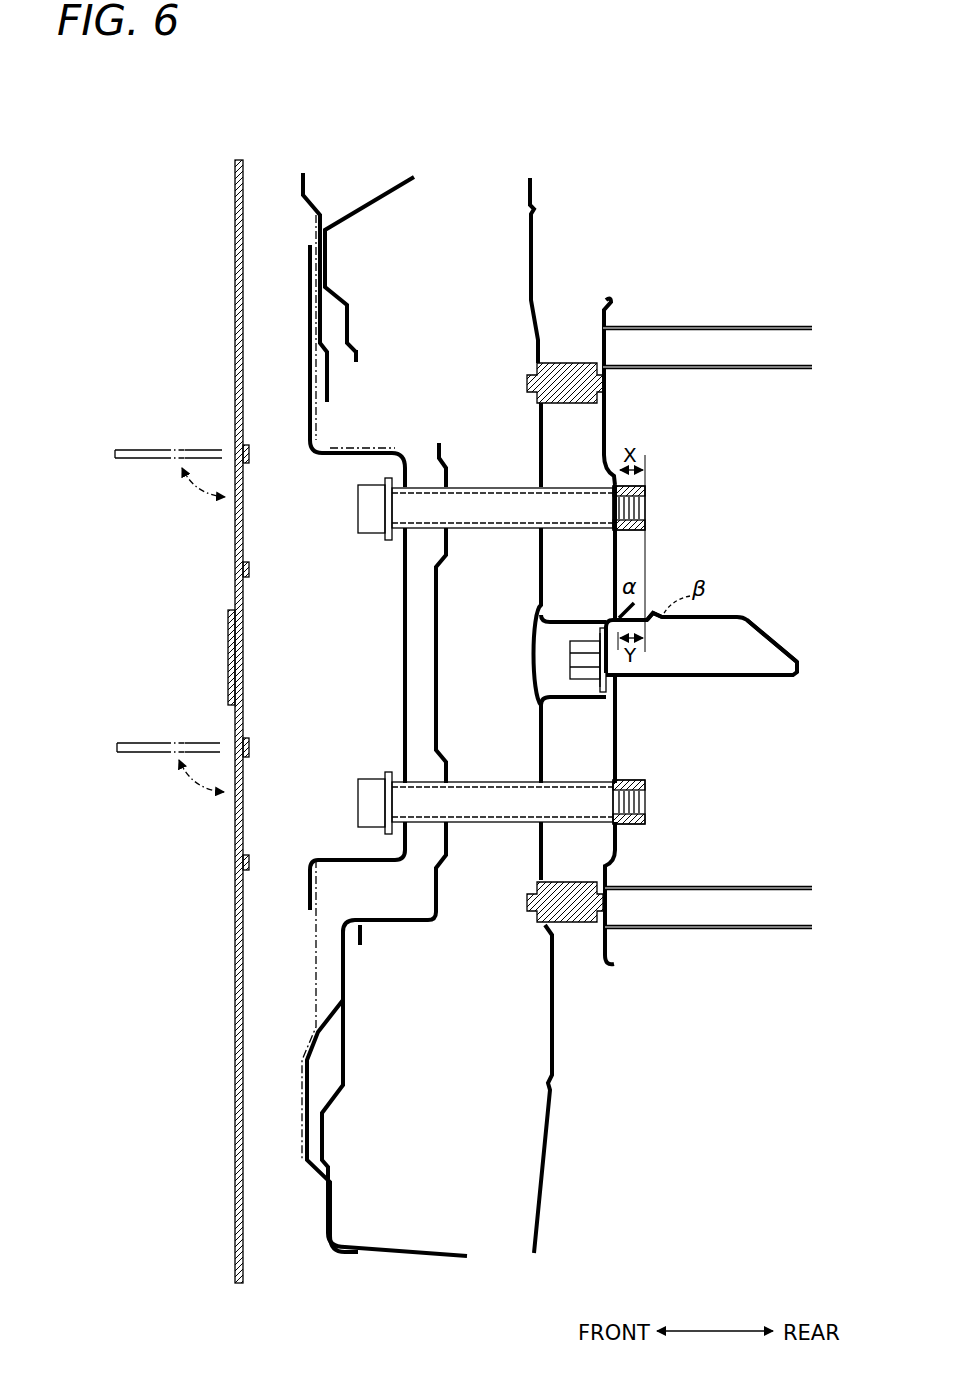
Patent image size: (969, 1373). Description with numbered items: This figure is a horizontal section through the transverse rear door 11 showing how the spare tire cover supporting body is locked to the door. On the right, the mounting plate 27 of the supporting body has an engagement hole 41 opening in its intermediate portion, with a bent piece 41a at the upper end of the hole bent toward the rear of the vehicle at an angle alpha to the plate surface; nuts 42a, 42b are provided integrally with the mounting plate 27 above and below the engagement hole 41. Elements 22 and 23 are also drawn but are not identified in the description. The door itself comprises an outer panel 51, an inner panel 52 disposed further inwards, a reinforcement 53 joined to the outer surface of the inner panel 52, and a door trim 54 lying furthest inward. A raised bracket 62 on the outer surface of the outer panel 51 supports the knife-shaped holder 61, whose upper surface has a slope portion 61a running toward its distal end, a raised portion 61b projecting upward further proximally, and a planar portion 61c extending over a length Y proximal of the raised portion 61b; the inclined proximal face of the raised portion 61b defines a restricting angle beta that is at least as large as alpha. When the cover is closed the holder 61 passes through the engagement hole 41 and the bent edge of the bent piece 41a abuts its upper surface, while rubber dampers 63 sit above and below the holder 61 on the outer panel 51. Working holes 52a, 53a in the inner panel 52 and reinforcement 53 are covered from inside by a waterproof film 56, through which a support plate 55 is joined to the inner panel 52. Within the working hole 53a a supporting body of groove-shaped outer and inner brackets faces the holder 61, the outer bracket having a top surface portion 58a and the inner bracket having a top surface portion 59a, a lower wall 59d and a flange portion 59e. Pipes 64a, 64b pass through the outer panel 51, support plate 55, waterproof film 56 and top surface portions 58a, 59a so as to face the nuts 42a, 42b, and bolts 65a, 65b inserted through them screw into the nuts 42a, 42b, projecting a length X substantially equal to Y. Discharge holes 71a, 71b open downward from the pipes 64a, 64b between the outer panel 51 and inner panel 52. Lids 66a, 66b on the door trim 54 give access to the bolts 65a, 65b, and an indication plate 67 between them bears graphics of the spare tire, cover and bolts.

The transverse rear door 11 is at (603, 108).
The upper rail 22 is at (750, 326).
The lower rail 23 is at (760, 887).
The mounting plate 27 is at (607, 303).
The engagement hole 41 is at (619, 683).
The bent piece 41a is at (627, 604).
The nut 42a is at (640, 486).
The nut 42b is at (640, 781).
The outer panel 51 is at (531, 180).
The inner panel 52 is at (305, 172).
The working hole 52a is at (328, 402).
The reinforcement 53 is at (415, 176).
The working hole 53a is at (358, 365).
The door trim 54 is at (236, 245).
The support plate 55 is at (308, 243).
The waterproof film 56 is at (300, 1090).
The top surface portion 58a is at (535, 650).
The top surface portion 59a is at (440, 900).
The lower wall 59d is at (400, 918).
The flange portion 59e is at (340, 953).
The holder 61 is at (801, 680).
The slope portion 61a is at (795, 650).
The raised portion 61b is at (700, 617).
The planar portion 61c is at (653, 615).
The bracket 62 is at (590, 690).
The damper 63 is at (570, 363).
The pipe 64a is at (485, 487).
The pipe 64b is at (485, 783).
The bolt 65a is at (358, 512).
The bolt 65b is at (358, 803).
The lid 66a is at (165, 450).
The lid 66b is at (165, 743).
The indication plate 67 is at (228, 658).
The discharge hole 71a is at (477, 530).
The discharge hole 71b is at (447, 830).